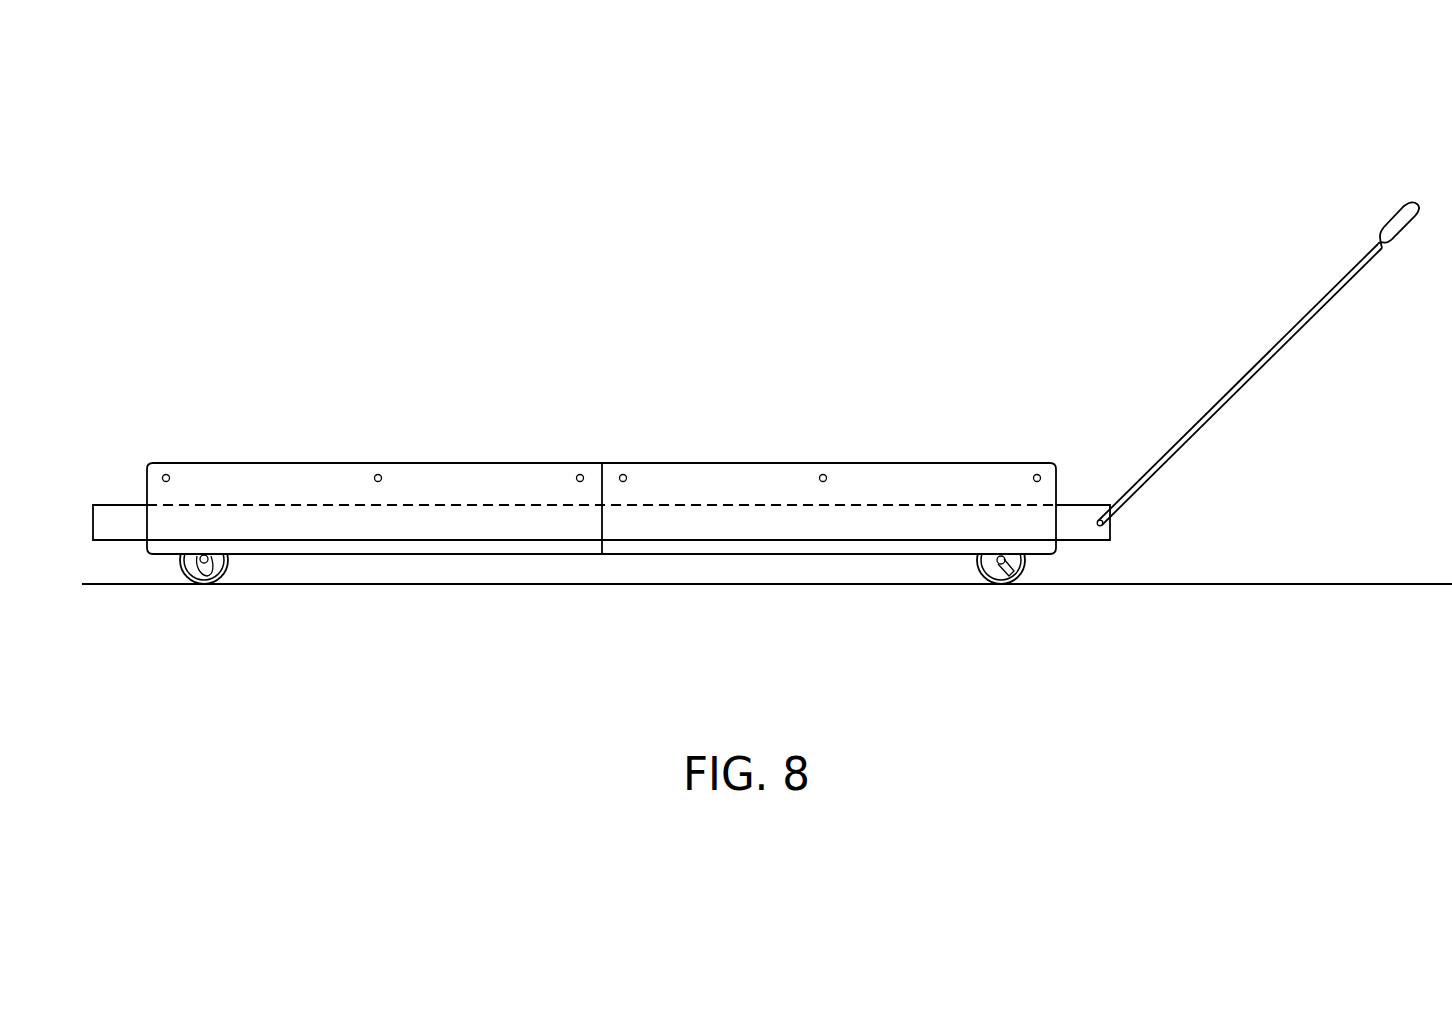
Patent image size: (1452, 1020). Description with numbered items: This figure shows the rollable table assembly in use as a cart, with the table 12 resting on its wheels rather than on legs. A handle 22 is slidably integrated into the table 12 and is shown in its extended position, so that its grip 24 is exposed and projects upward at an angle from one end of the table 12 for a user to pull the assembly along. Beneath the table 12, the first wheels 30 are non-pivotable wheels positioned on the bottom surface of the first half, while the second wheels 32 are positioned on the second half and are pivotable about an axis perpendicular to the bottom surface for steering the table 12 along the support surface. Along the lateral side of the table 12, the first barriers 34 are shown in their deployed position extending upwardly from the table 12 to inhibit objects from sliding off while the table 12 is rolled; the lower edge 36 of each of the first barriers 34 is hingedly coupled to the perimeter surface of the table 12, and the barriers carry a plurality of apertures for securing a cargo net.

The table 12 is at (1093, 505).
The handle 22 is at (1250, 372).
The grip 24 is at (1422, 207).
The first wheels 30 is at (203, 585).
The second wheels 32 is at (1000, 585).
The first barriers 34 is at (935, 463).
The lower edge 36 is at (330, 463).